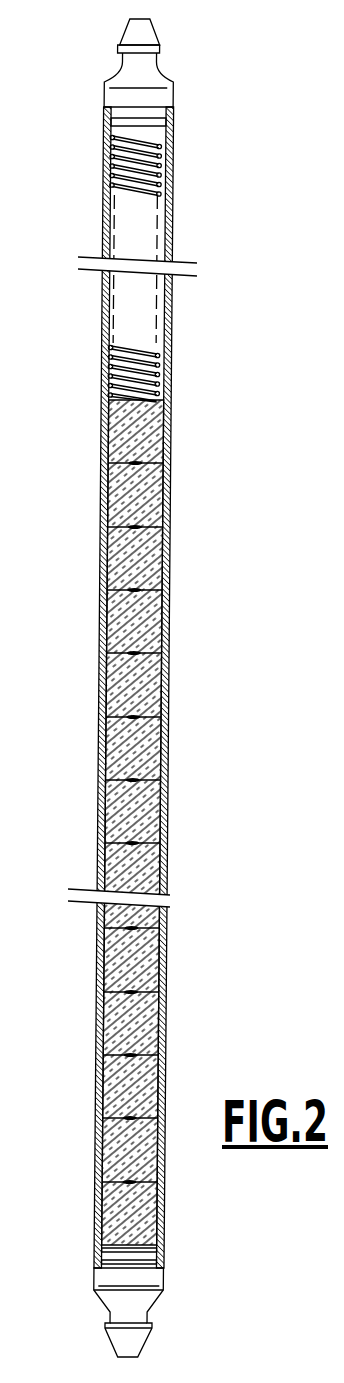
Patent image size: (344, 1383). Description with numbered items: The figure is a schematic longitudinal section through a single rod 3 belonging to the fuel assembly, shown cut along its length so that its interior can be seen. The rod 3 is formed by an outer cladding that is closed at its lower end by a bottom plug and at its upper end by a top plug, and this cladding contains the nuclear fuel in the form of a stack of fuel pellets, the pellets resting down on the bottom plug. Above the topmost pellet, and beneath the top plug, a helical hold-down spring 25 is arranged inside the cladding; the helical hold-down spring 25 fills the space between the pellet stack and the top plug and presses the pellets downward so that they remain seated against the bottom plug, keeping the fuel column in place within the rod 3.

The rod 3 is at (149, 688).
The helical hold-down spring 25 is at (168, 369).